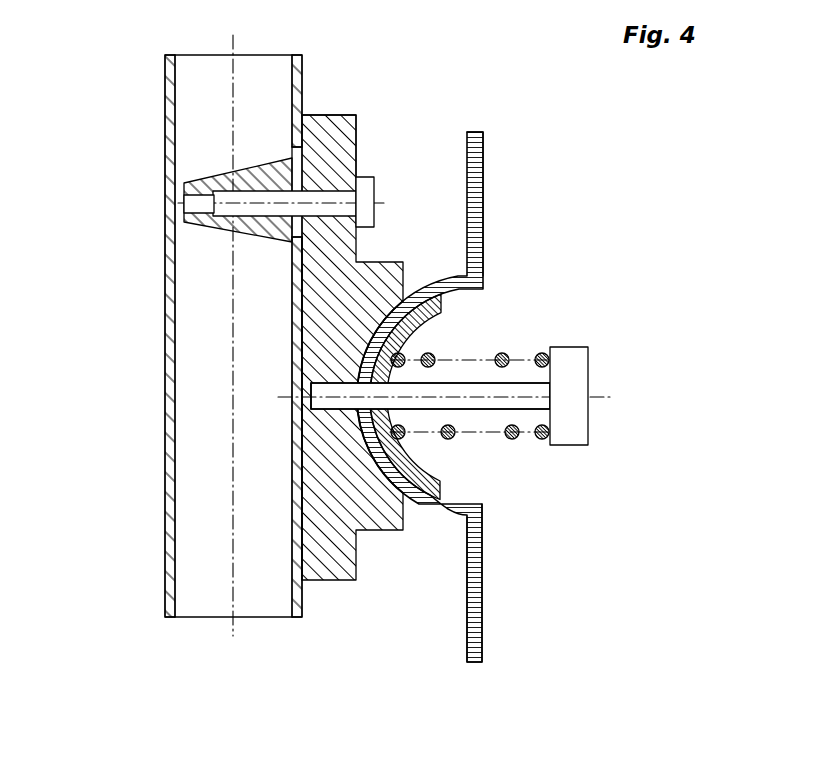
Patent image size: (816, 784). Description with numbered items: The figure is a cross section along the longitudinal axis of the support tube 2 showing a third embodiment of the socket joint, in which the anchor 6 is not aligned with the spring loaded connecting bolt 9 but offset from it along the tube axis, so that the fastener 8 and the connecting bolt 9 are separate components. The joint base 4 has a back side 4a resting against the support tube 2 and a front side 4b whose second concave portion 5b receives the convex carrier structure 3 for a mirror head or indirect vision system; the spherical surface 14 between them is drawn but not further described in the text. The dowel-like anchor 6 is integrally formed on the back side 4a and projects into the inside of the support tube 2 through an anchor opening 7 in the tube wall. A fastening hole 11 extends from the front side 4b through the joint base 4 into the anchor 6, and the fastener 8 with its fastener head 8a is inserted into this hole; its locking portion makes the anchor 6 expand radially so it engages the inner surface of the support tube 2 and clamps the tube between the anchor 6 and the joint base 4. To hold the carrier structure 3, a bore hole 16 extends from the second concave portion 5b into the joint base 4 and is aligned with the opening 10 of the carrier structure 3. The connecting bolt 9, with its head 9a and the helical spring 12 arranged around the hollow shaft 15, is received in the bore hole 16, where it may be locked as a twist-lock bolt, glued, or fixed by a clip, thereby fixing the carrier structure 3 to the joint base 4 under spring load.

The support tube 2 is at (165, 153).
The carrier structure 3 is at (480, 597).
The joint base 4 is at (360, 560).
The back side 4a is at (293, 525).
The front side 4b is at (405, 498).
The second concave portion 5b is at (390, 310).
The anchor 6 is at (253, 170).
The anchor opening 7 is at (300, 168).
The fastener 8 is at (258, 210).
The fastener head 8a is at (363, 188).
The spring loaded connecting bolt 9 is at (508, 390).
The head 9a is at (580, 430).
The opening 10 is at (362, 412).
The fastening hole 11 is at (198, 208).
The helical spring 12 is at (481, 355).
The spherical bearing surface 14 is at (410, 467).
The hollow shaft 15 is at (457, 378).
The bore hole 16 is at (328, 413).